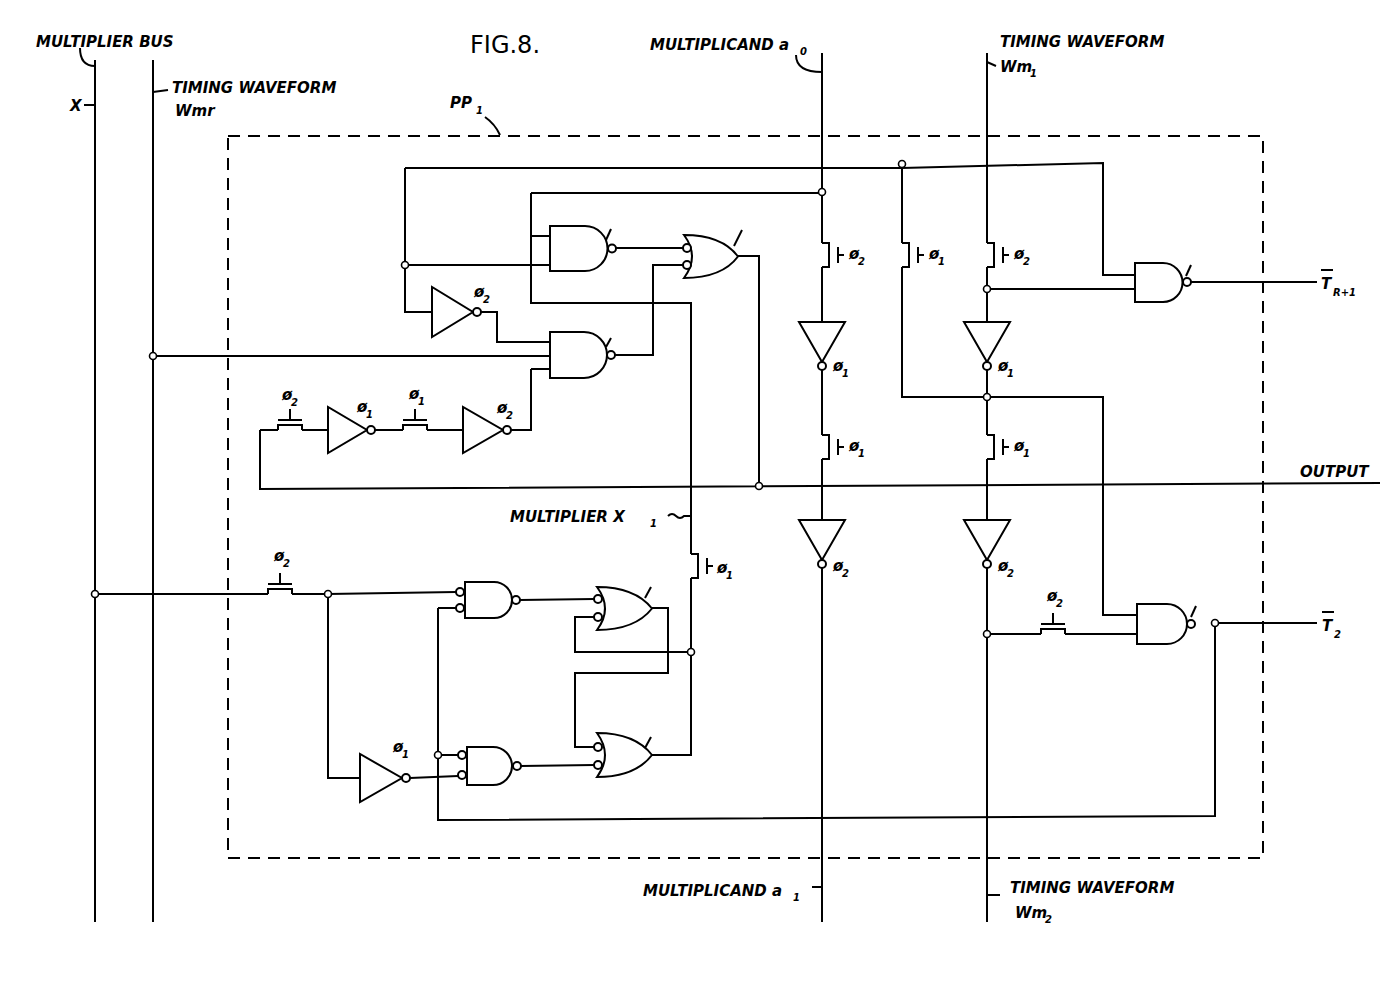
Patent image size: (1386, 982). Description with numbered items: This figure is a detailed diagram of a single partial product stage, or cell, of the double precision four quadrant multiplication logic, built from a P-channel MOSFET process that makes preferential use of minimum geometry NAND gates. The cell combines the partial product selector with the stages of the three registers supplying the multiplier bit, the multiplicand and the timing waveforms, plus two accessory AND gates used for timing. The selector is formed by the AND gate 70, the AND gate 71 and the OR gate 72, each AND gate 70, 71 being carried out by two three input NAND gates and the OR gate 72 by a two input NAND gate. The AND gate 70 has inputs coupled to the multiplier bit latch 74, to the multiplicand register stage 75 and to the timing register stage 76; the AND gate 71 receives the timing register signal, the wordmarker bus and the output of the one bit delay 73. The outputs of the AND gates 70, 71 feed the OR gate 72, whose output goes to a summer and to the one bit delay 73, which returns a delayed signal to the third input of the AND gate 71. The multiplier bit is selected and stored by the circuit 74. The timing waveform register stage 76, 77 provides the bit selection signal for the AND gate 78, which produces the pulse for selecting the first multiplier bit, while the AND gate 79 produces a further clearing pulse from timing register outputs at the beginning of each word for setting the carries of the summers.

The AND gate 70 is at (610, 268).
The AND gate 71 is at (608, 374).
The OR gate 72 is at (720, 278).
The one bit delay 73 is at (405, 464).
The bit latch 74 is at (525, 694).
The multiplicand register stage 75 is at (797, 426).
The timing waveform register stage 76 is at (1048, 215).
The timing waveform register stage 77 is at (1070, 536).
The AND gate 78 is at (1155, 604).
The AND gate 79 is at (1155, 302).